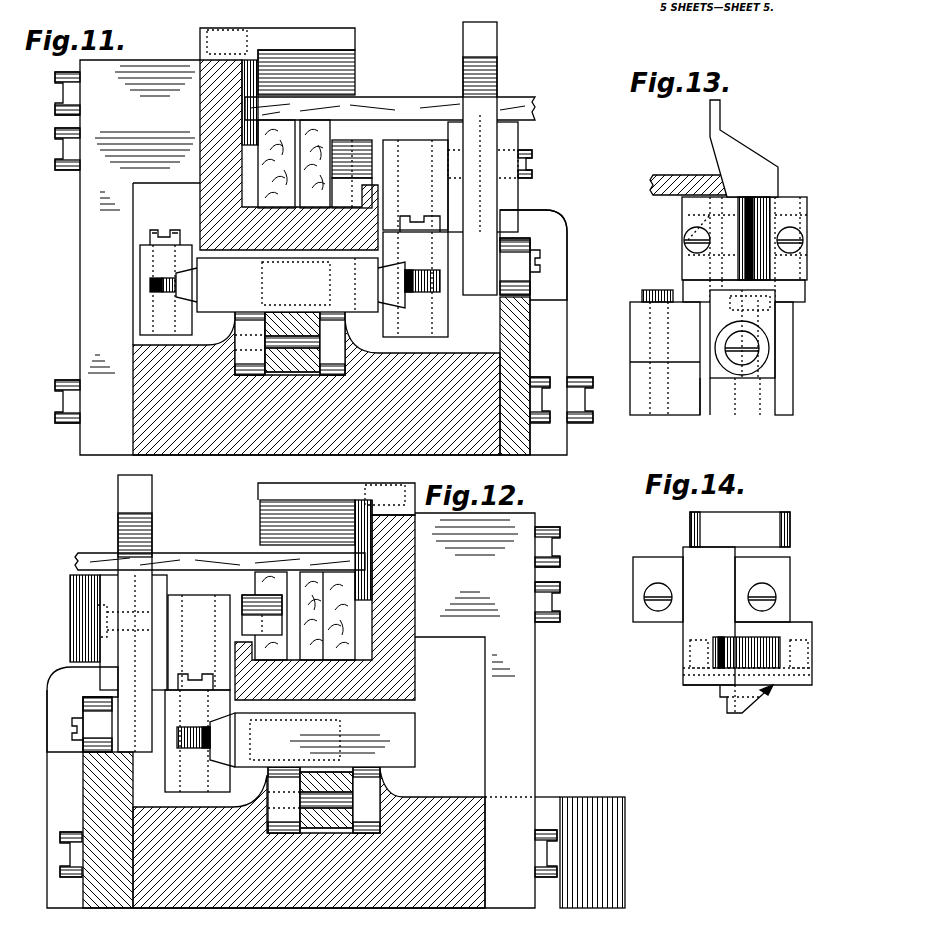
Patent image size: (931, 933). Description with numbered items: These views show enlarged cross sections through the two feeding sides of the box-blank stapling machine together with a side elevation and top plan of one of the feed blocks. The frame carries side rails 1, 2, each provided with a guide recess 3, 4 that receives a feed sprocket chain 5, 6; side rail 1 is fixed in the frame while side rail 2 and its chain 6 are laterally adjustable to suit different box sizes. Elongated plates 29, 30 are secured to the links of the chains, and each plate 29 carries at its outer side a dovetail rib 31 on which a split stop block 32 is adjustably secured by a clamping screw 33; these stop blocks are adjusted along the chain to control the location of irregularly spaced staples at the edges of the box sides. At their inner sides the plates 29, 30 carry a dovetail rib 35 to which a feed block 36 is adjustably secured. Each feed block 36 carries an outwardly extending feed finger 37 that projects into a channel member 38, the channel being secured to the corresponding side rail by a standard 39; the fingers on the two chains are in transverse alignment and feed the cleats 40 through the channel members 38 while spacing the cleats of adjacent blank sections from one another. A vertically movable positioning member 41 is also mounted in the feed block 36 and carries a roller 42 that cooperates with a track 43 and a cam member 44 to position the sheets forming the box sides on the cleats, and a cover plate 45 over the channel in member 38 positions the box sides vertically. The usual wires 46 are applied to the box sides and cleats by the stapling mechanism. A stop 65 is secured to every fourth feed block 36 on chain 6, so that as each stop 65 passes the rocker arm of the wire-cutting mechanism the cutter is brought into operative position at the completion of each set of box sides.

In FIG. 11, the side rail 1 is at (200, 440).
In FIG. 12, the side rail 2 is at (199, 895).
In FIG. 11, the guide recess 3 is at (245, 377).
In FIG. 12, the guide recess 4 is at (270, 833).
In FIG. 11, the feed sprocket chain 5 is at (262, 377).
In FIG. 12, the feed sprocket chain 6 is at (368, 833).
In FIG. 11, the elongated plate 29 is at (287, 285).
In FIG. 12, the elongated plate 30 is at (325, 740).
In FIG. 11, the dovetail rib 31 is at (186, 290).
In FIG. 11, the split stop block 32 is at (143, 307).
In FIG. 11, the clamping screw 33 is at (178, 222).
In FIG. 11, the dovetail rib 35 is at (406, 285).
In FIG. 12, the dovetail rib 35 is at (209, 740).
In FIG. 11, the feed block 36 is at (415, 238).
In FIG. 12, the feed block 36 is at (133, 657).
In FIG. 14, the feed block 36 is at (722, 616).
In FIG. 11, the feed finger 37 is at (363, 140).
In FIG. 12, the feed finger 37 is at (250, 613).
In FIG. 14, the feed finger 37 is at (763, 523).
In FIG. 11, the channel member 38 is at (213, 127).
In FIG. 12, the channel member 38 is at (390, 652).
In FIG. 11, the standard 39 is at (92, 237).
In FIG. 12, the standard 39 is at (508, 721).
In FIG. 11, the cleat 40 is at (300, 143).
In FIG. 12, the cleat 40 is at (345, 627).
In FIG. 11, the positioning member 41 is at (497, 72).
In FIG. 12, the positioning member 41 is at (128, 503).
In FIG. 13, the positioning member 41 is at (735, 155).
In FIG. 14, the positioning member 41 is at (745, 645).
In FIG. 11, the roller 42 is at (513, 268).
In FIG. 12, the roller 42 is at (92, 721).
In FIG. 14, the roller 42 is at (765, 692).
In FIG. 11, the track 43 is at (517, 319).
In FIG. 12, the track 43 is at (92, 781).
In FIG. 11, the cam member 44 is at (540, 233).
In FIG. 12, the cam member 44 is at (82, 700).
In FIG. 11, the cover plate 45 is at (351, 58).
In FIG. 12, the cover plate 45 is at (342, 503).
In FIG. 11, the wire 46 is at (302, 95).
In FIG. 12, the wire 46 is at (305, 548).
In FIG. 12, the stop 65 is at (82, 603).
In FIG. 13, the stop 65 is at (770, 200).
In FIG. 14, the stop 65 is at (740, 690).